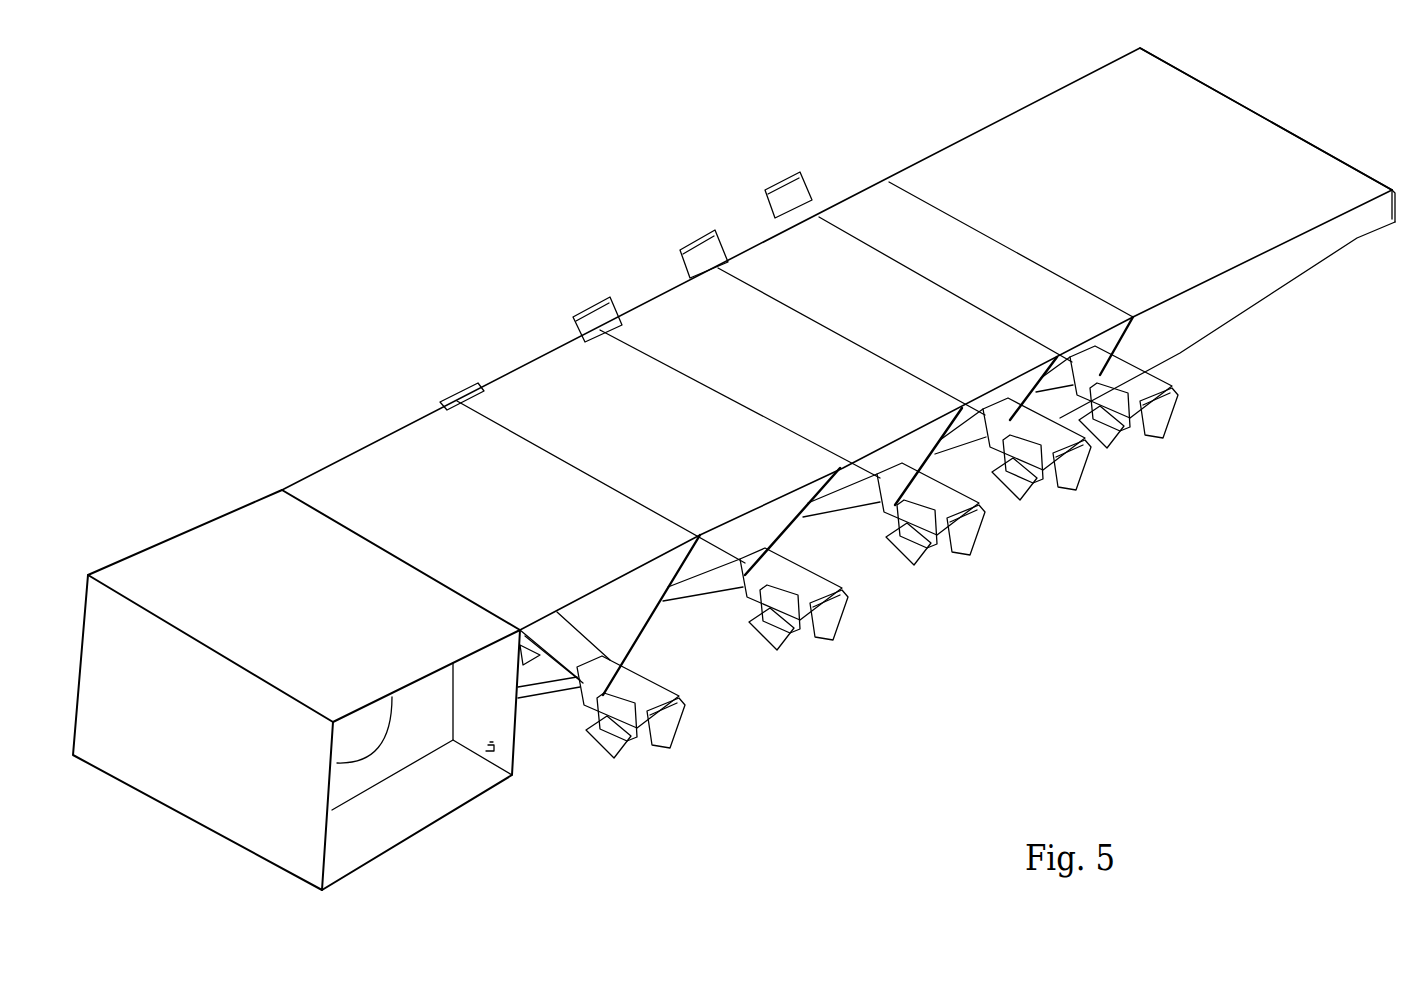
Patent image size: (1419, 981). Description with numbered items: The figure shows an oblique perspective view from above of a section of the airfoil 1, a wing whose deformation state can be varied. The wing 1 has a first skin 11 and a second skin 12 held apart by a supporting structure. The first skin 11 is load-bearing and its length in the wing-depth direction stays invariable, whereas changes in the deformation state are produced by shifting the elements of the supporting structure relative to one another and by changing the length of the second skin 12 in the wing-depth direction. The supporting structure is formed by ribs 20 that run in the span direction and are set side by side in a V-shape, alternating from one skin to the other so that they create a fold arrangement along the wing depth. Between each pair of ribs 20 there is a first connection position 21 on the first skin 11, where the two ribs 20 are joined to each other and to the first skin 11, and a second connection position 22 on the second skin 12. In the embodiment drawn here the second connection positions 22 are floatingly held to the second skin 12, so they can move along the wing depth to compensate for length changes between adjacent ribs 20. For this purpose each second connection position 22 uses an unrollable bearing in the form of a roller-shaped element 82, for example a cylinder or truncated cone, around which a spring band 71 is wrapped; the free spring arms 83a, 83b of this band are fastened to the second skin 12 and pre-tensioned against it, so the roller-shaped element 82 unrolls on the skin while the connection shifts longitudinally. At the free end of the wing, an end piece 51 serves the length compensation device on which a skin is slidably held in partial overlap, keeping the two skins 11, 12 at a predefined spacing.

The airfoil 1 is at (243, 447).
The first skin 11 is at (573, 370).
The second skin 12 is at (680, 640).
The rib 20 is at (785, 530).
The first connection position 21 is at (715, 270).
The second connection position 22 is at (996, 554).
The end piece 51 is at (1183, 240).
The spring band 71 is at (615, 720).
The roller-shaped element 82 is at (643, 733).
The free spring arm 83a is at (607, 747).
The free spring arm 83b is at (688, 730).